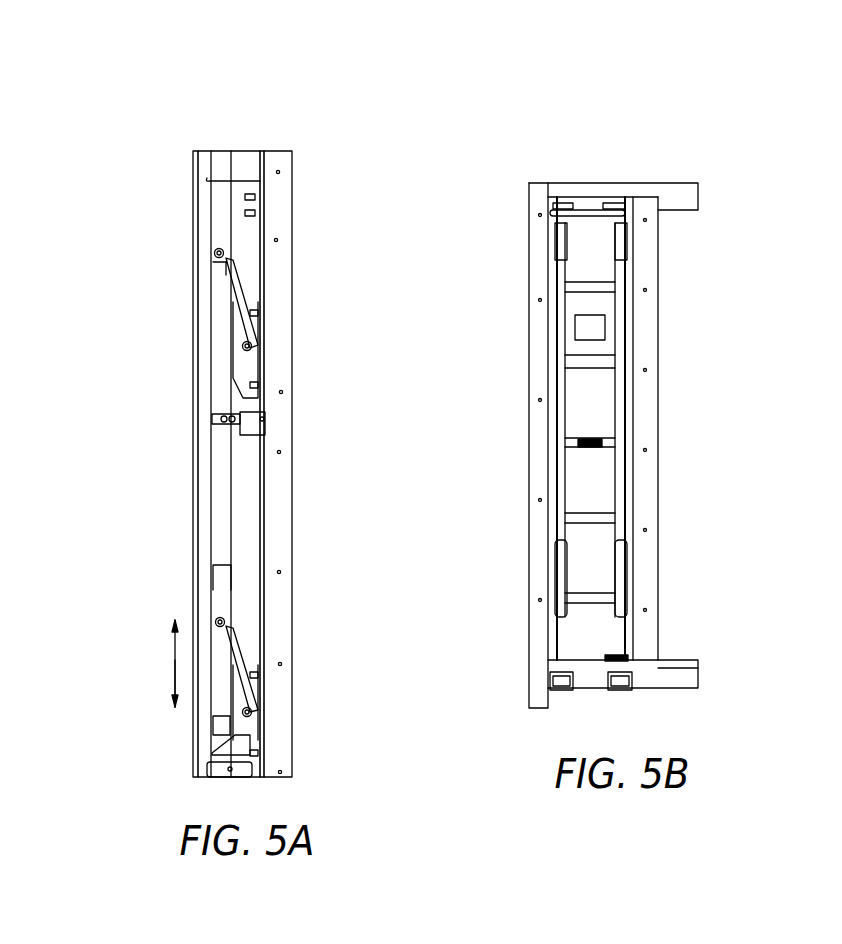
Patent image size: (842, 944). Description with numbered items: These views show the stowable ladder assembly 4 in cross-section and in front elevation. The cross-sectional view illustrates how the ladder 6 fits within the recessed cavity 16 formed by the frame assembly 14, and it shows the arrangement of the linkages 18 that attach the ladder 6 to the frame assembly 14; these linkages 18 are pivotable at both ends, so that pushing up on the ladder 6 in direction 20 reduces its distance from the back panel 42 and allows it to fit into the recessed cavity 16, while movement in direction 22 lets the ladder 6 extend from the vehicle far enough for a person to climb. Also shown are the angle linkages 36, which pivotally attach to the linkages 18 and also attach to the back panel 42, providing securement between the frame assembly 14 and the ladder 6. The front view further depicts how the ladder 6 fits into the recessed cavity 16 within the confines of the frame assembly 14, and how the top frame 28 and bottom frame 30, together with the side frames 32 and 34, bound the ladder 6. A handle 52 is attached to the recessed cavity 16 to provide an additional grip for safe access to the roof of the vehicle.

In FIG. 5A, the stowable ladder assembly 4 is at (168, 182).
In FIG. 5B, the stowable ladder assembly 4 is at (712, 155).
In FIG. 5A, the ladder 6 is at (218, 292).
In FIG. 5B, the ladder 6 is at (620, 300).
In FIG. 5A, the frame assembly 14 is at (224, 120).
In FIG. 5B, the frame assembly 14 is at (512, 265).
In FIG. 5A, the recessed cavity 16 is at (238, 230).
In FIG. 5B, the recessed cavity 16 is at (605, 270).
In FIG. 5A, the linkages 18 is at (240, 300).
In FIG. 5A, the direction 20 is at (174, 620).
In FIG. 5A, the direction 22 is at (174, 707).
In FIG. 5B, the top frame 28 is at (650, 183).
In FIG. 5B, the bottom frame 30 is at (690, 678).
In FIG. 5B, the side frame 32 is at (535, 682).
In FIG. 5B, the side frame 34 is at (645, 610).
In FIG. 5A, the angle linkage 36 is at (248, 372).
In FIG. 5A, the back panel 42 is at (262, 462).
In FIG. 5B, the handle 52 is at (590, 206).